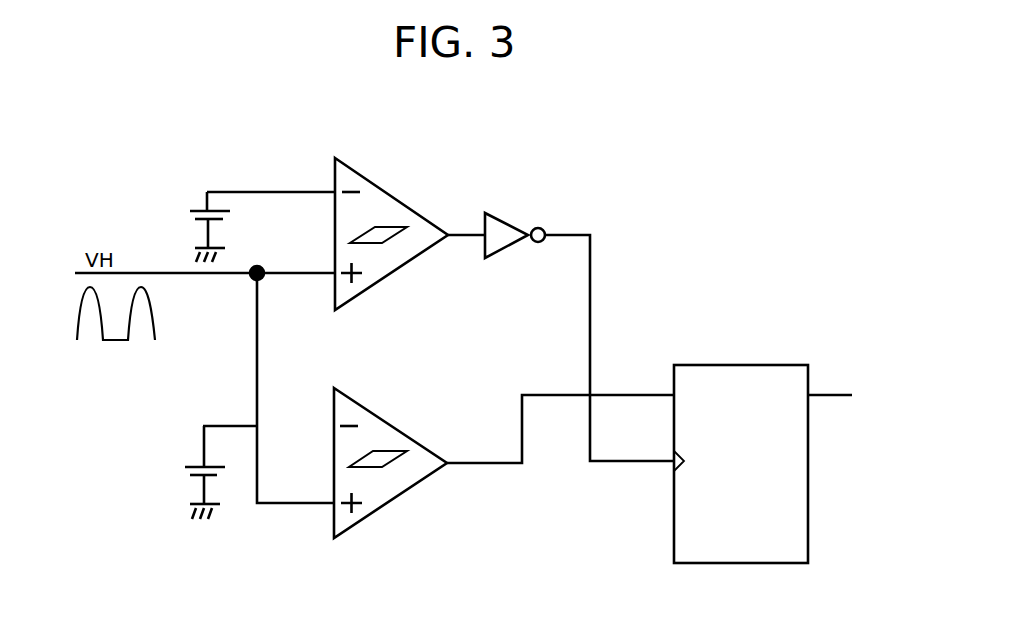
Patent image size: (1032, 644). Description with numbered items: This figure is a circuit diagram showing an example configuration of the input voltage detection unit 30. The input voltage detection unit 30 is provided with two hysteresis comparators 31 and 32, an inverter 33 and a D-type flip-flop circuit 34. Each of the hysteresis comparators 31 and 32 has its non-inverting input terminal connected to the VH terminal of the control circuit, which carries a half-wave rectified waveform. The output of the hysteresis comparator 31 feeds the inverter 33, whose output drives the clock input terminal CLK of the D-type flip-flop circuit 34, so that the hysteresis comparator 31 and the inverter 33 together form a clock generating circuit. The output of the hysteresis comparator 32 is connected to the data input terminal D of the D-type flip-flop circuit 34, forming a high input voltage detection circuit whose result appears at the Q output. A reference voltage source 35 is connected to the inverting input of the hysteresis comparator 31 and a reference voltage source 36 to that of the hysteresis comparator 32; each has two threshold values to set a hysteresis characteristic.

The input voltage detection unit 30 is at (678, 204).
The hysteresis comparator 31 is at (400, 197).
The hysteresis comparator 32 is at (400, 430).
The inverter 33 is at (510, 220).
The D-type flip-flop circuit 34 is at (742, 365).
The reference voltage source 35 is at (188, 217).
The reference voltage source 36 is at (185, 473).